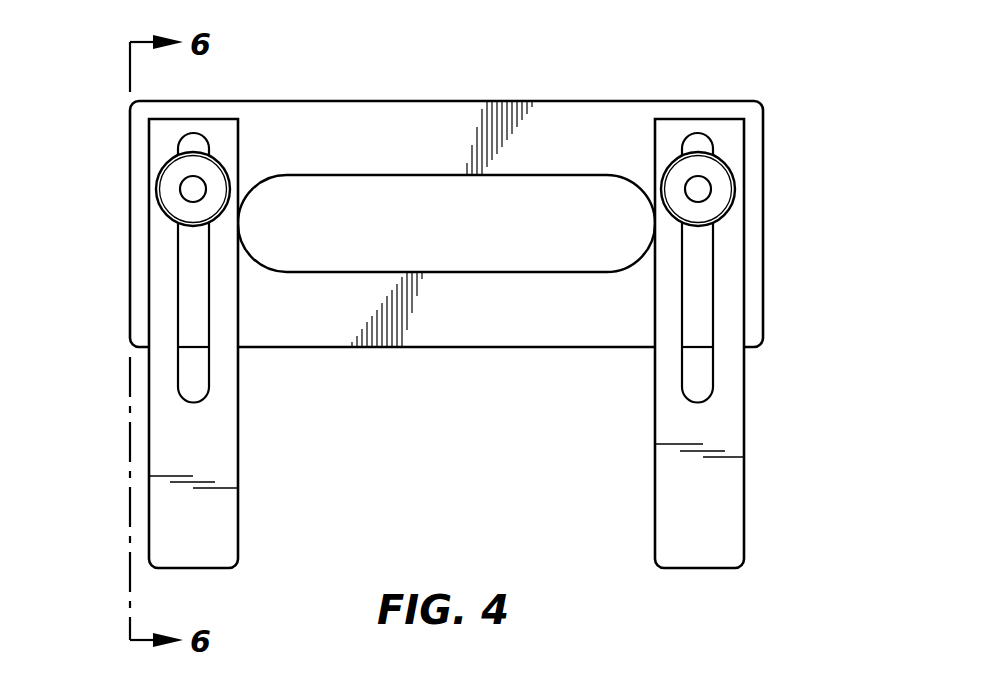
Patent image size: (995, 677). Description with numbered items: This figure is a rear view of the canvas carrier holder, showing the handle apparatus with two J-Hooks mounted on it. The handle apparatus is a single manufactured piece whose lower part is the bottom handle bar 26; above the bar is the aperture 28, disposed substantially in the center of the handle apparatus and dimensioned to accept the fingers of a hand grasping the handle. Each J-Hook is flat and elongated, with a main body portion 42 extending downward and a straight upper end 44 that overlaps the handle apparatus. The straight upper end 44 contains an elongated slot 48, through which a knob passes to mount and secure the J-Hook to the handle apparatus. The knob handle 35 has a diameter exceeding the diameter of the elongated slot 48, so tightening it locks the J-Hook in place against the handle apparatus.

The bottom handle bar 26 is at (450, 315).
The aperture 28 is at (368, 212).
The knob handle 35 is at (715, 183).
The main body portion 42 is at (163, 423).
The straight upper end 44 is at (163, 249).
The elongated slot 48 is at (698, 273).